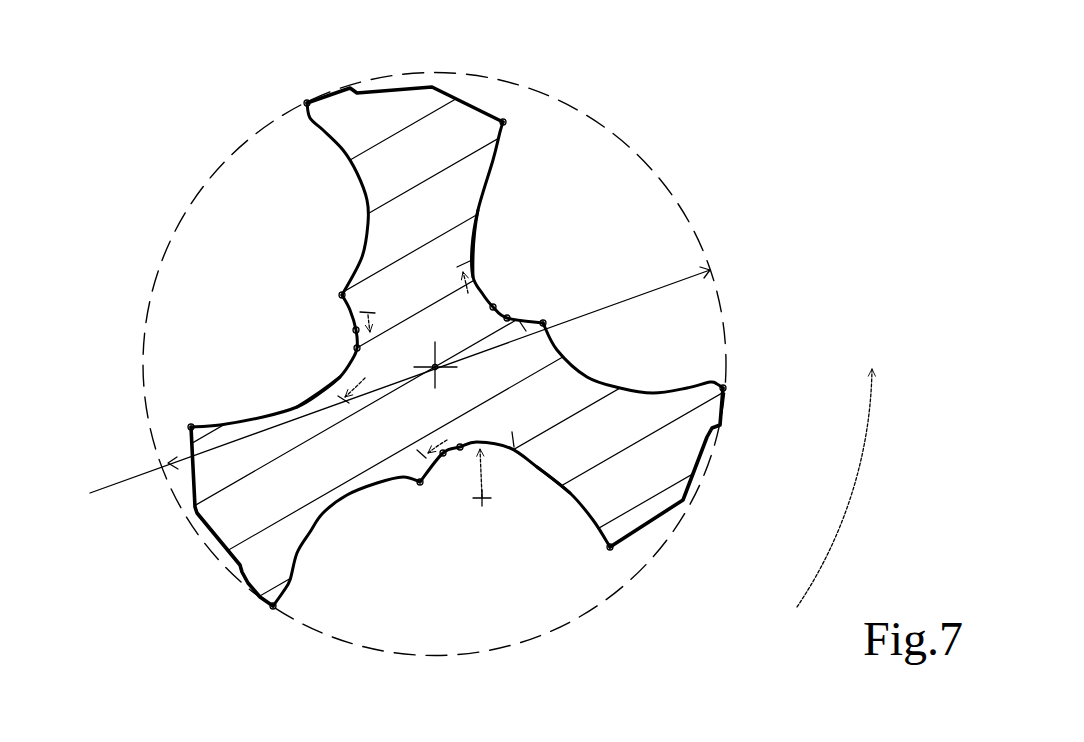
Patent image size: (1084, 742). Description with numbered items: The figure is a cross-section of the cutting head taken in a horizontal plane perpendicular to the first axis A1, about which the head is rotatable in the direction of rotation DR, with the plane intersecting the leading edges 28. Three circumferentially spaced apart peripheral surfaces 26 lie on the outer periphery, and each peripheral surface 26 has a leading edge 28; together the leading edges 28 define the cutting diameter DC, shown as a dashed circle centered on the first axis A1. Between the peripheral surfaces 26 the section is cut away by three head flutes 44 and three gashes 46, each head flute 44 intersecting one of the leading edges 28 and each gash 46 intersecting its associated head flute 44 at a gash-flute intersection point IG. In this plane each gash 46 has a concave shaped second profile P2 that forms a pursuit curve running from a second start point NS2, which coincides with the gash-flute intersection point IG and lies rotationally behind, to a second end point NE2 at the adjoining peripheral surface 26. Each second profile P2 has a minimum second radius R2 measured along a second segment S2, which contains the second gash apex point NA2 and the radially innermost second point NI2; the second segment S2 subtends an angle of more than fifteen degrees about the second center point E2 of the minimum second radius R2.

The peripheral surface 26 is at (331, 84).
The leading edge 28 is at (307, 103).
The head flute 44 is at (355, 185).
The gash 46 is at (494, 160).
The second end point NE2 is at (503, 122).
The second profile P2 is at (476, 210).
The radially innermost second point NI2 is at (493, 305).
The second gash apex point NA2 is at (508, 317).
The gash-flute intersection point IG is at (560, 305).
The second start point NS2 is at (543, 323).
The second segment S2 is at (512, 327).
The first axis A1 is at (443, 367).
The cutting diameter DC is at (382, 385).
The minimum second radius R2 is at (479, 494).
The second center point E2 is at (488, 501).
The direction of rotation DR is at (844, 470).